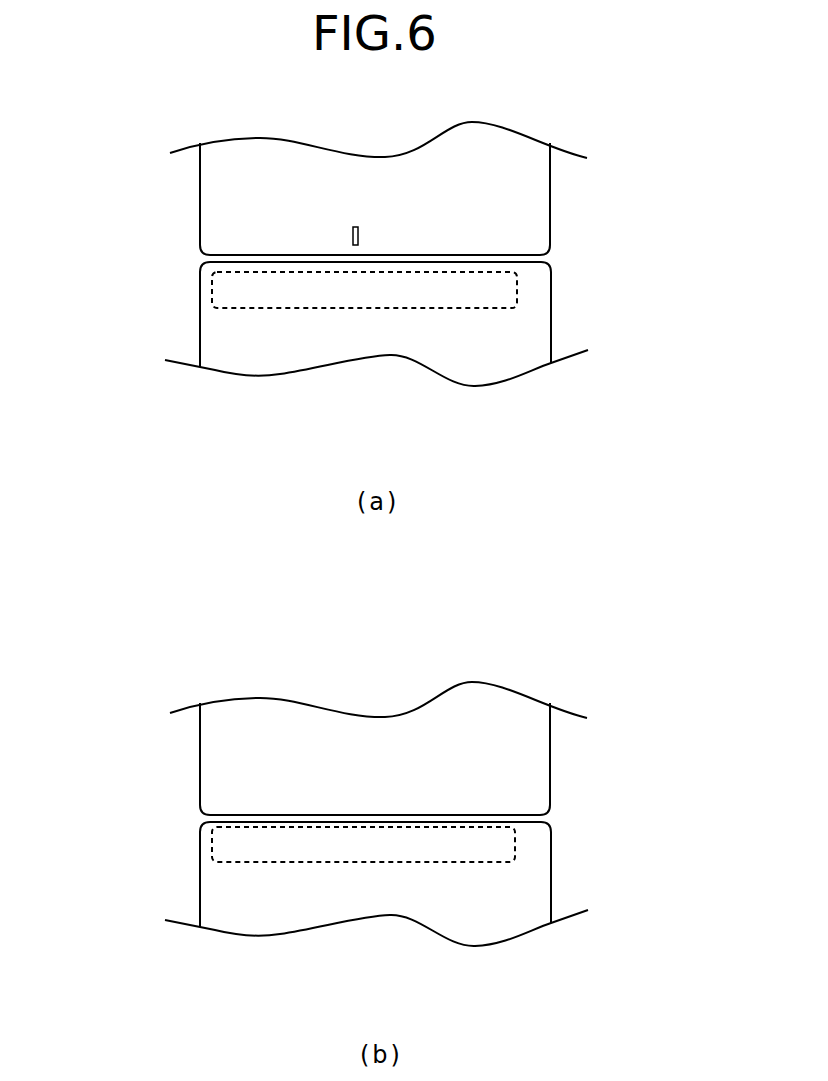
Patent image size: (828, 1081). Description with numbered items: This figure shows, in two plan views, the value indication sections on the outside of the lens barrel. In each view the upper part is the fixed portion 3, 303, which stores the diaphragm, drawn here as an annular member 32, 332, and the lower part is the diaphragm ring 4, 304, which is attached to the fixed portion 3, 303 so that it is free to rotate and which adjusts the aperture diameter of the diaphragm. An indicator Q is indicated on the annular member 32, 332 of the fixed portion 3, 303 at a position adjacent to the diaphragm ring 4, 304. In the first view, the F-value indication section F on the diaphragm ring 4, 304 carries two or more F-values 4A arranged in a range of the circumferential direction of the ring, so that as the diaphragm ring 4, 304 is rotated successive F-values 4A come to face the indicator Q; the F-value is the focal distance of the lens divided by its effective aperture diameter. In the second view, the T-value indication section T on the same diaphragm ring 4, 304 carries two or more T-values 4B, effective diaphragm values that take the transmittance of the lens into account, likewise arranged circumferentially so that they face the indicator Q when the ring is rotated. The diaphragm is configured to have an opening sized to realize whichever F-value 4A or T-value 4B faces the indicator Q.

The fixed portion 3 is at (414, 468).
The fixed portion 303 is at (556, 188).
The annular member 32 is at (142, 474).
The annular member 332 is at (200, 210).
The diaphragm ring 4 is at (339, 604).
The diaphragm ring 304 is at (200, 320).
The indicator Q is at (358, 233).
The F-values 4A is at (421, 304).
The T-values 4B is at (423, 860).
The F-value indication section F is at (364, 301).
The T-value indication section T is at (363, 860).